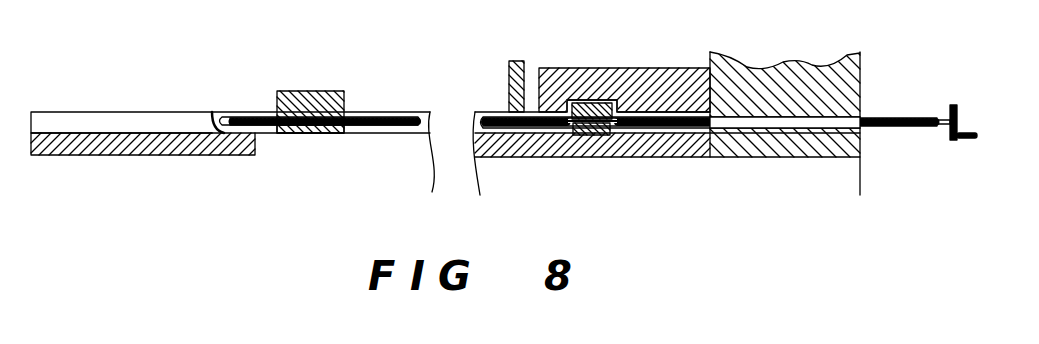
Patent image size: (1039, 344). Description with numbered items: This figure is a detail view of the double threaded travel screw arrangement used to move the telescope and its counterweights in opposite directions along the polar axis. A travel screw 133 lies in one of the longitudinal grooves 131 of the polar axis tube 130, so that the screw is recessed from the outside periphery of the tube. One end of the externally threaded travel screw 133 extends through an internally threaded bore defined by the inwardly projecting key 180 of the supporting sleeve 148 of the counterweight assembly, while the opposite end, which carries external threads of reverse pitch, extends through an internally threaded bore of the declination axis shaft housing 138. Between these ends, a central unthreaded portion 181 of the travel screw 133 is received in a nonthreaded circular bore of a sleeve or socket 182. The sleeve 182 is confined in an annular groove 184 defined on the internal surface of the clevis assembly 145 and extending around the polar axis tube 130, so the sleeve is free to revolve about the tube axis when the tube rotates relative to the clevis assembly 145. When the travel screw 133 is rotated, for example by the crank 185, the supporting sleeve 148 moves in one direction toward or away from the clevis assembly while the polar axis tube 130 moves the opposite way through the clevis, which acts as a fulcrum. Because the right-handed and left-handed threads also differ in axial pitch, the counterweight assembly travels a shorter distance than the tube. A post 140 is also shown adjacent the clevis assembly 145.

The polar axis tube 130 is at (110, 112).
The longitudinal groove 131 is at (140, 133).
The travel screw 133 is at (380, 118).
The declination axis shaft housing 138 is at (863, 72).
The stop post 140 is at (508, 74).
The clevis assembly 145 is at (690, 68).
The supporting sleeve 148 is at (323, 91).
The inwardly projecting key 180 is at (303, 134).
The central unthreaded portion 181 is at (585, 136).
The sleeve or socket 182 is at (583, 102).
The annular groove 184 is at (622, 98).
The crank 185 is at (957, 108).